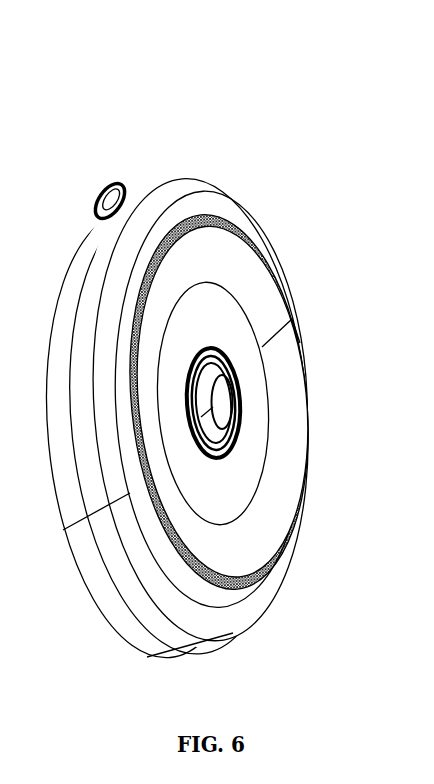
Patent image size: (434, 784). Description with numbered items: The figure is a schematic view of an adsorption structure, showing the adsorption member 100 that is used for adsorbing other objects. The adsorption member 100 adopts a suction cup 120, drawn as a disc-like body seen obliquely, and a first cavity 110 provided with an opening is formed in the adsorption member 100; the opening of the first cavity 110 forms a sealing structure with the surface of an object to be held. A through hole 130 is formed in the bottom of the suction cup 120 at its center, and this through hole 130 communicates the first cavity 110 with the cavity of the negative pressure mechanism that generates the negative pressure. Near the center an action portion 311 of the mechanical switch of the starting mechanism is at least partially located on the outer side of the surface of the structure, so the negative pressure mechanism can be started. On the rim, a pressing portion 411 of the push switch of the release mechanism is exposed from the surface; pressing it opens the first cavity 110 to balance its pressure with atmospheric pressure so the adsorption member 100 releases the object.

The adsorption member 100 is at (183, 347).
The first cavity 110 is at (233, 250).
The suction cup 120 is at (273, 258).
The through hole 130 is at (227, 374).
The action portion 311 is at (213, 407).
The pressing portion 411 is at (108, 183).